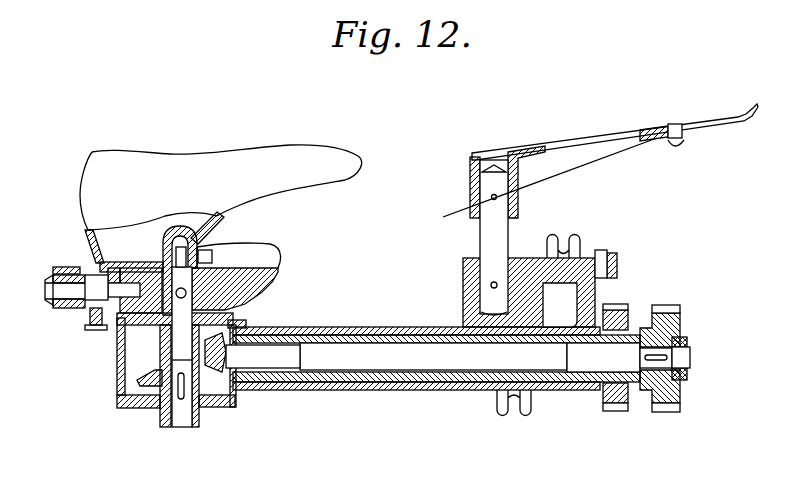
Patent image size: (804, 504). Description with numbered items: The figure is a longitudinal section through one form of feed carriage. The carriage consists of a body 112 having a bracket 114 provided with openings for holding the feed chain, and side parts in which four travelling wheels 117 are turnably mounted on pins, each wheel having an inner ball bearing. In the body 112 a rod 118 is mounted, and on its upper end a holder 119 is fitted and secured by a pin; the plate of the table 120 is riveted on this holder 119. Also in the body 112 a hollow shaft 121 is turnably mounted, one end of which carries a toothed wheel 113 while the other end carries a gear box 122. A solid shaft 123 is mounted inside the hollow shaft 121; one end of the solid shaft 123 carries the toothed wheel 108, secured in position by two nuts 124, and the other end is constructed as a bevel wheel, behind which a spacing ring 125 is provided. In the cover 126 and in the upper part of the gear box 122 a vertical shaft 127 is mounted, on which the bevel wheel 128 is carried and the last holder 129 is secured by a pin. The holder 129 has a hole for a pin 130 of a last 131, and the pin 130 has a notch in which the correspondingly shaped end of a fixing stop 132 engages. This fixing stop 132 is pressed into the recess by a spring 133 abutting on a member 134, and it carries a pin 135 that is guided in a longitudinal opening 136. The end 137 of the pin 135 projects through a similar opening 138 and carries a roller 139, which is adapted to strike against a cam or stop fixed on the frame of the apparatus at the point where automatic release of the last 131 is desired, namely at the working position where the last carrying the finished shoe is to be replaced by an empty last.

The toothed wheel 108 is at (673, 307).
The body 112 is at (562, 312).
The toothed wheel 113 is at (625, 305).
The bracket 114 is at (617, 255).
The travelling wheels 117 is at (580, 238).
The rod 118 is at (495, 250).
The holder 119 is at (468, 208).
The table 120 is at (558, 137).
The hollow shaft 121 is at (398, 327).
The gear box 122 is at (242, 327).
The solid shaft 123 is at (325, 357).
The nuts 124 is at (690, 343).
The spacing ring 125 is at (237, 323).
The cover 126 is at (232, 392).
The vertical shaft 127 is at (182, 413).
The bevel wheel 128 is at (152, 387).
The last holder 129 is at (275, 268).
The pin 130 is at (160, 263).
The last 131 is at (183, 162).
The fixing stop 132 is at (100, 322).
The spring 133 is at (60, 267).
The member 134 is at (57, 303).
The pin 135 is at (110, 263).
The longitudinal opening 136 is at (90, 266).
The end 137 is at (128, 308).
The opening 138 is at (96, 312).
The roller 139 is at (120, 295).